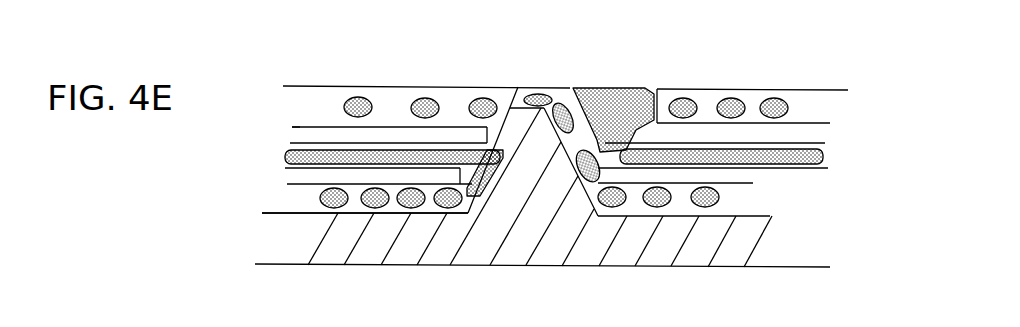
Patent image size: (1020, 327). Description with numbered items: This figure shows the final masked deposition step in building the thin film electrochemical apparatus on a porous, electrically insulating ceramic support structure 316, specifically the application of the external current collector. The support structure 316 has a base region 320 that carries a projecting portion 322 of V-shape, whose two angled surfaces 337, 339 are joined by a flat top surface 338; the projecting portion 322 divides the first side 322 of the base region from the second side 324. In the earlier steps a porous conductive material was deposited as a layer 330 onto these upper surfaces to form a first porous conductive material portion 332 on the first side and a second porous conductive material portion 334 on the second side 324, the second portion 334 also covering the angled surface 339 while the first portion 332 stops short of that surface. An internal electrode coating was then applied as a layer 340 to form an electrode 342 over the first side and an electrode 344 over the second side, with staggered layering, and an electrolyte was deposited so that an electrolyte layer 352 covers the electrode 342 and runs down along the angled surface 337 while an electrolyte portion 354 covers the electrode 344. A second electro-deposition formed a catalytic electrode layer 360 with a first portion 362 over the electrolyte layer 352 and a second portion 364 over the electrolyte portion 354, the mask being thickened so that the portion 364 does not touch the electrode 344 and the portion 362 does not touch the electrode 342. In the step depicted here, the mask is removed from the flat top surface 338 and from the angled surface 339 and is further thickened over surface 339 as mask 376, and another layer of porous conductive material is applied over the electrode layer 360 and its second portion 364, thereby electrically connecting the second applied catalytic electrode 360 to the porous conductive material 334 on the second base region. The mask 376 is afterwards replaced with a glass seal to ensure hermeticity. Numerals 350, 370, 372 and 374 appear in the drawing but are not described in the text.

The support structure 316 is at (647, 258).
The base region 320 is at (447, 255).
The projecting portion / first side 322 is at (546, 108).
The second side 324 is at (675, 210).
The porous conductive material layer 330 is at (280, 207).
The first porous conductive material portion 332 is at (307, 213).
The second porous conductive material portion 334 is at (754, 203).
The angled surface 337 is at (533, 151).
The flat top surface 338 is at (524, 99).
The angled surface 339 is at (607, 103).
The internal electrode coating layer 340 is at (308, 172).
The electrode 342 is at (370, 178).
The electrode 344 is at (673, 170).
The left conductive strip 350 is at (407, 158).
The electrolyte layer 352 is at (460, 138).
The electrolyte portion 354 is at (793, 143).
The second electrode layer 360 is at (307, 133).
The first portion of second electrode layer 362 is at (335, 135).
The second portion of second electrode layer 364 is at (713, 132).
The upper left layer 370 is at (388, 98).
The upper left layer lower surface 372 is at (467, 97).
The upper right layer 374 is at (790, 89).
The mask 376 is at (640, 85).